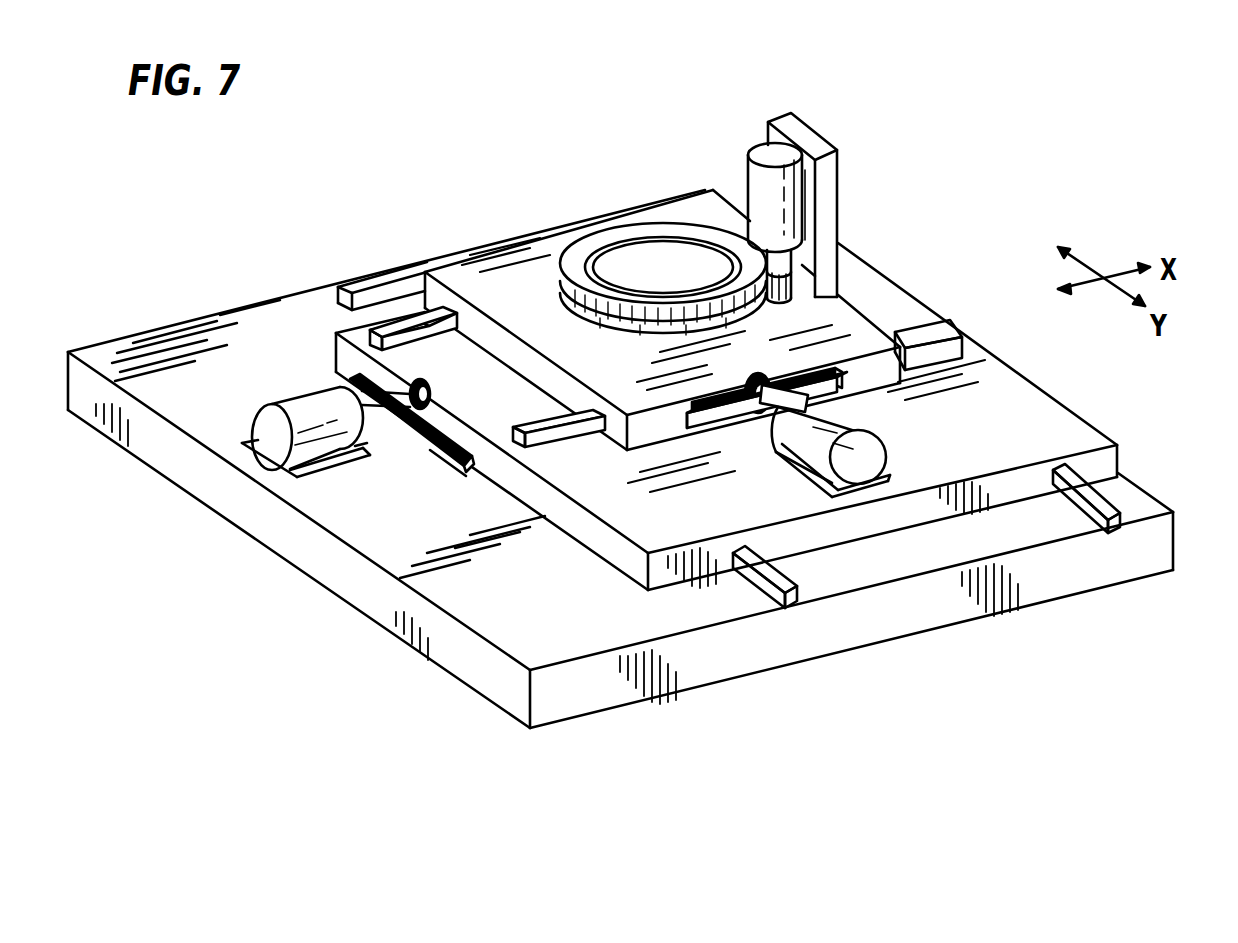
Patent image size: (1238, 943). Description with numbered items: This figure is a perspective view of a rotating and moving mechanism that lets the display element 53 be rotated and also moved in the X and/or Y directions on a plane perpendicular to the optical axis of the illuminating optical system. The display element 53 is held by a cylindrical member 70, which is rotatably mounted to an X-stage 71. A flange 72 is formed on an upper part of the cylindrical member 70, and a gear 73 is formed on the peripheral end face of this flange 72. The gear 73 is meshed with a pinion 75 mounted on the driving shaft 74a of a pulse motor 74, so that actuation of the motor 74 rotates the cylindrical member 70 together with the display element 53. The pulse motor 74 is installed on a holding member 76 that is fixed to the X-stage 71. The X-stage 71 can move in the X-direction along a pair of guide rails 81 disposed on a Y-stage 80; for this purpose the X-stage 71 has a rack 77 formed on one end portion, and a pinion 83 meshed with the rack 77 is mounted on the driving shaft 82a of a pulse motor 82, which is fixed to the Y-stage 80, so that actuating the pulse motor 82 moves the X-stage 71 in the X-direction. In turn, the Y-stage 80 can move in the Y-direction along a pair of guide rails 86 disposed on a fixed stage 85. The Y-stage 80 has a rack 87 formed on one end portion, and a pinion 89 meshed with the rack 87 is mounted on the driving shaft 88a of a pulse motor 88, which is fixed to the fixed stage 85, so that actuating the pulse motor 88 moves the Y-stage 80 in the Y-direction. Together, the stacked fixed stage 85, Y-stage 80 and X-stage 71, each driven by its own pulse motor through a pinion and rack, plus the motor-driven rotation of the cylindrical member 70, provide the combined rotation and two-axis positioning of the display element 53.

The display element 53 is at (640, 240).
The cylindrical member 70 is at (655, 342).
The X-stage 71 is at (838, 312).
The flange 72 is at (598, 238).
The gear 73 is at (523, 262).
The pulse motor 74 is at (775, 152).
The driving shaft 74a is at (793, 258).
The pinion 75 is at (840, 345).
The holding member 76 is at (790, 118).
The rack 77 is at (713, 430).
The Y-stage 80 is at (1082, 415).
The guide rails 81 is at (333, 362).
The pulse motor 82 is at (872, 457).
The driving shaft 82a is at (775, 415).
The pinion 83 is at (748, 385).
The fixed stage 85 is at (583, 680).
The guide rails 86 is at (1105, 500).
The rack 87 is at (433, 465).
The pulse motor 88 is at (270, 442).
The driving shaft 88a is at (394, 432).
The pinion 89 is at (427, 376).